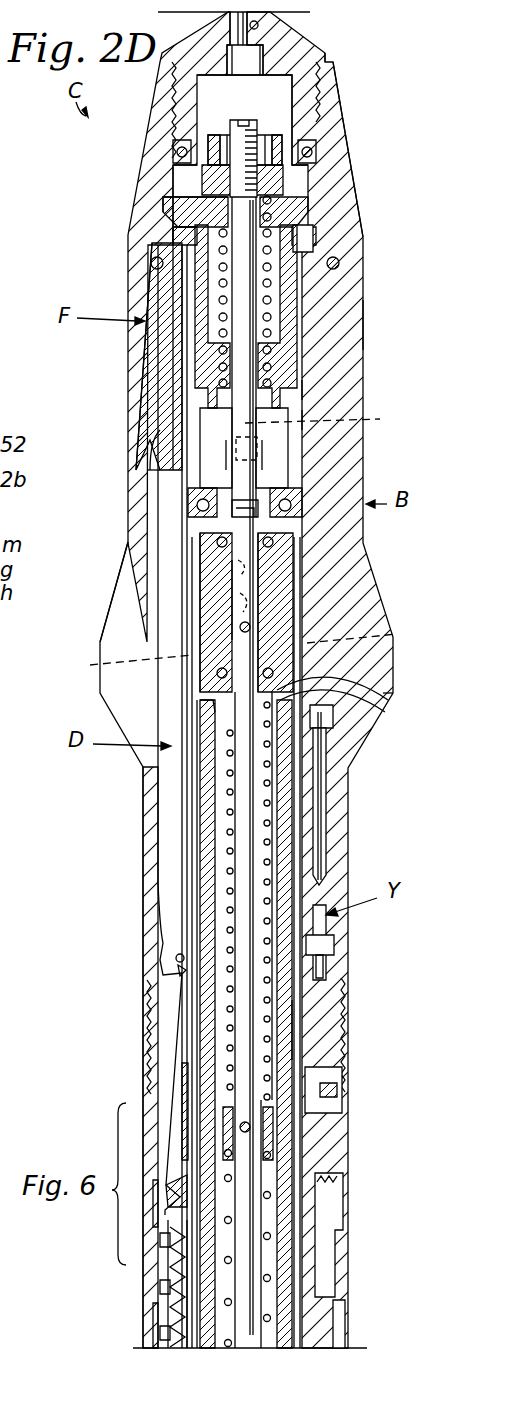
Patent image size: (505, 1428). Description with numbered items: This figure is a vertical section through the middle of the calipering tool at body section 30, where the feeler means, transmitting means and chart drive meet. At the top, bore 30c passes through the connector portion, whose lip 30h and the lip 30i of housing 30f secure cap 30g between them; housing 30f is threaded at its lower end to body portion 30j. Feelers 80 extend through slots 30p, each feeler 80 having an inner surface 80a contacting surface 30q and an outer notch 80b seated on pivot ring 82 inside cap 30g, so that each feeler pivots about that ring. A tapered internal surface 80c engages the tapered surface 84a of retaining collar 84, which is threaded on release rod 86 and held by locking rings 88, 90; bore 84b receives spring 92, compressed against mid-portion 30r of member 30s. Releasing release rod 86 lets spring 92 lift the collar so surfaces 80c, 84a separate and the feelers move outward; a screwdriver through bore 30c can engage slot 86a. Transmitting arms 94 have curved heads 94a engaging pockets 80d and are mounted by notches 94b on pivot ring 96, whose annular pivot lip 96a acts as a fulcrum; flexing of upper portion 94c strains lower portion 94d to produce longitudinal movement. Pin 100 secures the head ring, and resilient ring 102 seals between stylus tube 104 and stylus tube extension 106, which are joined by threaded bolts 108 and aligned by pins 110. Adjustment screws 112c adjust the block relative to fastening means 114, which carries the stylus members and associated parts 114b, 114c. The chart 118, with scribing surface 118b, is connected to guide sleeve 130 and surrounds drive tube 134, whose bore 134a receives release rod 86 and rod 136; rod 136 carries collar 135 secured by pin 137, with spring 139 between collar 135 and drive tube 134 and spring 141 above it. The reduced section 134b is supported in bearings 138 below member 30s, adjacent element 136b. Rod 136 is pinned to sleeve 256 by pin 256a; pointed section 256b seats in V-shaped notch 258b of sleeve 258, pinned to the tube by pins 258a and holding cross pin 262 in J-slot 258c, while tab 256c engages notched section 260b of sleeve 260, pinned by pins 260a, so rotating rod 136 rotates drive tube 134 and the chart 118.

The body section 30 is at (313, 35).
The bore 30c is at (258, 25).
The lip of connector portion 30h is at (328, 78).
The cap 30g is at (347, 207).
The lip of housing 30i is at (357, 268).
The housing 30f is at (340, 310).
The surface of body section 30q is at (187, 292).
The mid-portion 30r is at (290, 393).
The member 30s is at (293, 418).
The slots 30p is at (130, 705).
The body portion 30j is at (350, 1081).
The pivot ring 82 is at (150, 262).
The retaining collar 84 is at (196, 192).
The tapered surface 84a is at (183, 209).
The bore 84b is at (278, 288).
The feeler 80 is at (146, 333).
The inner surface 80a is at (183, 234).
The outer notch 80b is at (340, 232).
The internal surface 80c is at (187, 189).
The inner pocket 80d is at (173, 396).
The release rod 86 is at (257, 363).
The slot 86a is at (244, 124).
The locking ring 88 is at (290, 178).
The locking ring 90 is at (282, 140).
The spring 92 is at (219, 349).
The transmitting arm 94 is at (158, 797).
The curved head 94a is at (160, 430).
The notch 94b is at (180, 957).
The upper portion 94c is at (160, 677).
The lower portion 94d is at (170, 1011).
The pivot ring 96 is at (180, 970).
The annular pivot lip 96a is at (176, 957).
The pin 100 is at (343, 1196).
The resilient ring 102 is at (330, 940).
The stylus tube 104 is at (323, 1006).
The stylus tube extension 106 is at (320, 893).
The threaded bolts 108 is at (320, 784).
The pins 110 is at (320, 960).
The adjustment screws 112c is at (163, 1306).
The fastening means 114 is at (167, 1265).
The ratchet spring 114b is at (163, 1283).
The ratchet spring 114c is at (163, 1331).
The chart 118 is at (187, 810).
The scribing surface 118b is at (193, 822).
The guide sleeve 130 is at (293, 558).
The drive tube 134 is at (287, 1278).
The central bore 134a is at (278, 1015).
The upper reduced diameter section 134b is at (297, 464).
The collar 135 is at (275, 1140).
The rod 136 is at (250, 812).
The bearing 136b is at (283, 489).
The pin 137 is at (252, 1126).
The bearings 138 is at (190, 503).
The spring 139 is at (270, 1238).
The spring 141 is at (230, 773).
The sleeve 256 is at (307, 604).
The pin 256a is at (252, 624).
The pointed section 256b is at (230, 591).
The depending tab 256c is at (382, 631).
The sleeve 258 is at (193, 532).
The pins 258a is at (283, 538).
The V-shaped notch 258b is at (213, 561).
The J-slot 258c is at (338, 413).
The sleeve 260 is at (353, 731).
The pins 260a is at (382, 690).
The notched section 260b is at (104, 669).
The cross pin 262 is at (277, 444).